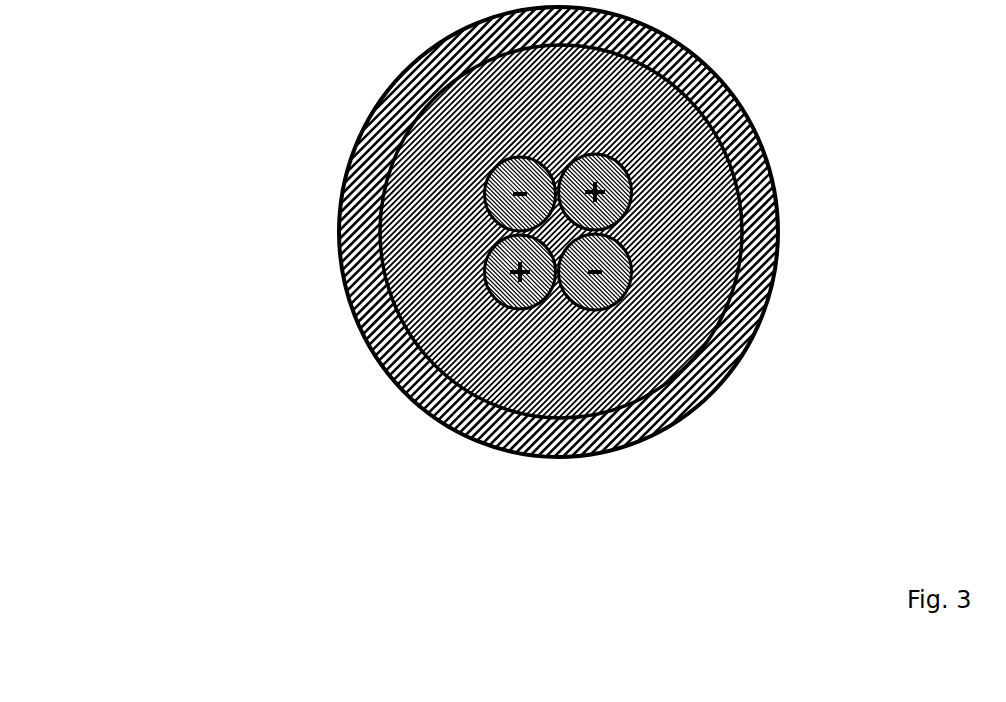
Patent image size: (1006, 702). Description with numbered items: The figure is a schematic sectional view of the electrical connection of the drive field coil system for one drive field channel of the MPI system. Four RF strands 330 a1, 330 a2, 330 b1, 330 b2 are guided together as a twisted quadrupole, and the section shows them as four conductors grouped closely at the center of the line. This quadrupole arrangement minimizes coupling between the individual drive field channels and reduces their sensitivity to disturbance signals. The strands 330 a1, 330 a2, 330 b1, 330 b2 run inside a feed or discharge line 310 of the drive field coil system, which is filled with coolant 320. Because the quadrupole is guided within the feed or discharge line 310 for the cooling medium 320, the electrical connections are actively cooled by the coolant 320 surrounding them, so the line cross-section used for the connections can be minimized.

The feed or discharge line 310 is at (353, 318).
The coolant 320 is at (550, 385).
The RF strand 330 a1 is at (630, 184).
The RF strand 330 a2 is at (487, 275).
The RF strand 330 b1 is at (640, 292).
The RF strand 330 b2 is at (490, 172).